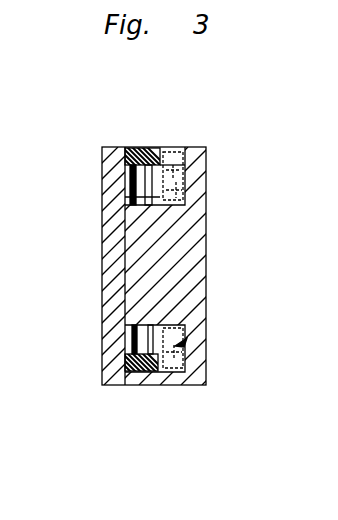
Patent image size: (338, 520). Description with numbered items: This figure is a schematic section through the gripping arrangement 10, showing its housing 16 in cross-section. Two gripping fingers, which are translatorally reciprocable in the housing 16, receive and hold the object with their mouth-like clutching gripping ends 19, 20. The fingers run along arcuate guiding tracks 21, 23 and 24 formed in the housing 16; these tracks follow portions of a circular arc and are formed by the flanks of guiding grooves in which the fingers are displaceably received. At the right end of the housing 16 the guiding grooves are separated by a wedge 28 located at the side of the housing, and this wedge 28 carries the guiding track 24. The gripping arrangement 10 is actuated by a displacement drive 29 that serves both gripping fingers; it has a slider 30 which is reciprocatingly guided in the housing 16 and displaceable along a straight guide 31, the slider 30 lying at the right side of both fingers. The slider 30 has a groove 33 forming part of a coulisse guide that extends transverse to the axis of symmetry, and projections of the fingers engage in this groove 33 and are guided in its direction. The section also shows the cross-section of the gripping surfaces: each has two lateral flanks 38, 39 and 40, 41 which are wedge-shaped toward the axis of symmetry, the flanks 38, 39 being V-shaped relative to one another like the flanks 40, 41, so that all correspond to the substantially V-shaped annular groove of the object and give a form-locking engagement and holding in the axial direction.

The gripping arrangement 10 is at (210, 146).
The housing 16 is at (188, 177).
The gripping end 19 is at (147, 166).
The gripping end 20 is at (148, 372).
The guiding track 21 is at (134, 160).
The guiding track 23 is at (139, 375).
The guiding track 24 is at (130, 199).
The wedge 28 is at (138, 252).
The displacement drive 29 is at (178, 344).
The slider 30 is at (185, 196).
The straight guide 31 is at (186, 165).
The groove 33 is at (176, 323).
The lateral flank 38 is at (130, 184).
The lateral flank 39 is at (172, 164).
The lateral flank 40 is at (128, 362).
The lateral flank 41 is at (183, 352).